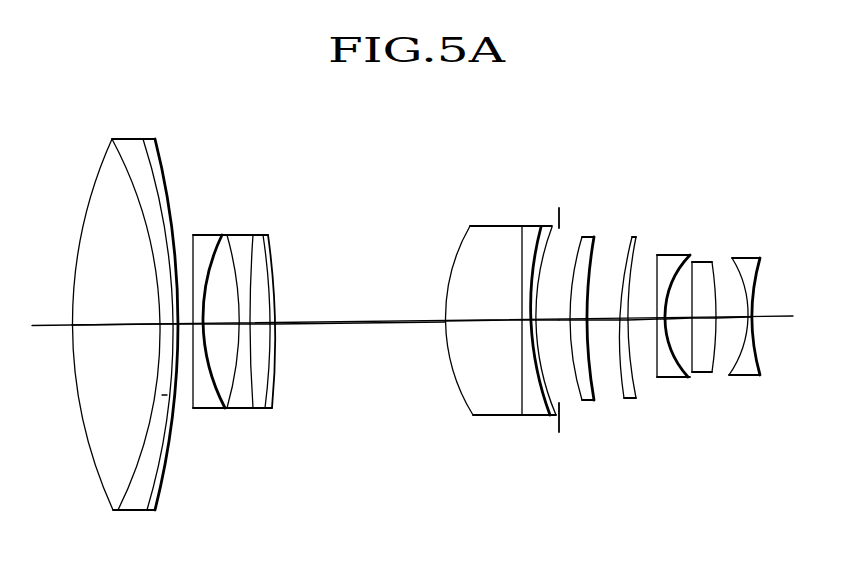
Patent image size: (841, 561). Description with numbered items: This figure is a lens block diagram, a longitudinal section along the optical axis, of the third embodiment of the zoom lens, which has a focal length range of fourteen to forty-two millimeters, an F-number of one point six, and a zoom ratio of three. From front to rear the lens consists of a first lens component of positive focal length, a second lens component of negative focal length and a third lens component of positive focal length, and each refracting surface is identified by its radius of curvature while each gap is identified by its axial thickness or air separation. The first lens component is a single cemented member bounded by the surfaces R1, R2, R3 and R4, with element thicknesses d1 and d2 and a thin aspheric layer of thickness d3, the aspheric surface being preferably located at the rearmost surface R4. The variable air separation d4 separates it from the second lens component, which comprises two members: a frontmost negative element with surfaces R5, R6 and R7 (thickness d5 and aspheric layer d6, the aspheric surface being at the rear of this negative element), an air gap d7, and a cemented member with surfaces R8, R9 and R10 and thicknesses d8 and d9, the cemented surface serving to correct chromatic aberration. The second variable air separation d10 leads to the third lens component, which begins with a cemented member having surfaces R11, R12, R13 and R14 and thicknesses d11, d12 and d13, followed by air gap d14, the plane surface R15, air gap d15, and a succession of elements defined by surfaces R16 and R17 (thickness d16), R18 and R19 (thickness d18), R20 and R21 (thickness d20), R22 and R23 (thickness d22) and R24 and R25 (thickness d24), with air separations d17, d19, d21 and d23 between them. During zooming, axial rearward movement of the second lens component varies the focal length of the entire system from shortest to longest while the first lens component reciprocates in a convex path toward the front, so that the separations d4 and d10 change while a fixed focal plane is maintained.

The radius of curvature of the first surface R1 is at (107, 152).
The radius of curvature of the second surface R2 is at (111, 144).
The radius of curvature of the third surface R3 is at (140, 140).
The radius of curvature of the fourth surface R4 is at (157, 143).
The radius of curvature of the fifth surface R5 is at (193, 244).
The radius of curvature of the sixth surface R6 is at (221, 250).
The radius of curvature of the seventh surface R7 is at (234, 248).
The radius of curvature of the eighth surface R8 is at (254, 240).
The radius of curvature of the ninth surface R9 is at (262, 238).
The radius of curvature of the tenth surface R10 is at (277, 250).
The radius of curvature of the eleventh surface R11 is at (460, 253).
The radius of curvature of the twelfth surface R12 is at (522, 240).
The radius of curvature of the thirteenth surface R13 is at (534, 240).
The radius of curvature of the fourteenth surface R14 is at (548, 238).
The radius of curvature of the fifteenth surface R15 is at (559, 218).
The radius of curvature of the sixteenth surface R16 is at (576, 240).
The radius of curvature of the seventeenth surface R17 is at (591, 240).
The radius of curvature of the eighteenth surface R18 is at (621, 244).
The radius of curvature of the nineteenth surface R19 is at (637, 248).
The radius of curvature of the twentieth surface R20 is at (657, 268).
The radius of curvature of the twenty-first surface R21 is at (686, 262).
The radius of curvature of the twenty-second surface R22 is at (696, 260).
The radius of curvature of the twenty-third surface R23 is at (713, 260).
The radius of curvature of the twenty-fourth surface R24 is at (736, 257).
The radius of curvature of the twenty-fifth surface R25 is at (762, 262).
The axial thickness between the first and second surfaces d1 is at (87, 326).
The axial thickness between the second and third surfaces d2 is at (165, 323).
The axial thickness between the third and fourth surfaces d3 is at (173, 328).
The variable axial air separation between the fourth and fifth surfaces d4 is at (168, 396).
The axial thickness between the fifth and sixth surfaces d5 is at (203, 366).
The axial thickness between the sixth and seventh surfaces d6 is at (221, 325).
The axial air separation between the seventh and eighth surfaces d7 is at (221, 332).
The axial thickness between the eighth and ninth surfaces d8 is at (246, 362).
The axial thickness between the ninth and tenth surfaces d9 is at (262, 330).
The variable axial air separation between the tenth and eleventh surfaces d10 is at (318, 324).
The axial thickness between the eleventh and twelfth surfaces d11 is at (462, 323).
The axial thickness between the twelfth and thirteenth surfaces d12 is at (522, 317).
The axial thickness between the thirteenth and fourteenth surfaces d13 is at (530, 321).
The axial air separation between the fourteenth and fifteenth surfaces d14 is at (543, 316).
The axial air separation between the fifteenth and sixteenth surfaces d15 is at (558, 323).
The axial thickness between the sixteenth and seventeenth surfaces d16 is at (574, 352).
The axial air separation between the seventeenth and eighteenth surfaces d17 is at (593, 312).
The axial thickness between the eighteenth and nineteenth surfaces d18 is at (607, 322).
The axial air separation between the nineteenth and twentieth surfaces d19 is at (632, 323).
The axial thickness between the twentieth and twenty-first surfaces d20 is at (666, 380).
The axial air separation between the twenty-first and twenty-second surfaces d21 is at (688, 378).
The axial thickness between the twenty-second and twenty-third surfaces d22 is at (711, 376).
The axial air separation between the twenty-third and twenty-fourth surfaces d23 is at (716, 314).
The axial thickness between the twenty-fourth and twenty-fifth surfaces d24 is at (735, 328).